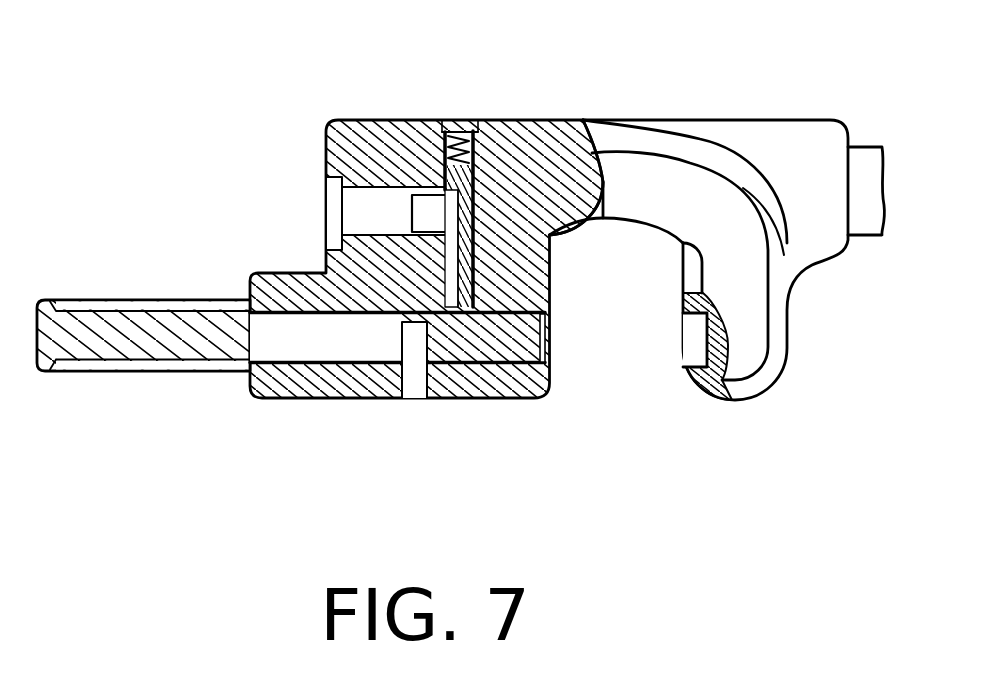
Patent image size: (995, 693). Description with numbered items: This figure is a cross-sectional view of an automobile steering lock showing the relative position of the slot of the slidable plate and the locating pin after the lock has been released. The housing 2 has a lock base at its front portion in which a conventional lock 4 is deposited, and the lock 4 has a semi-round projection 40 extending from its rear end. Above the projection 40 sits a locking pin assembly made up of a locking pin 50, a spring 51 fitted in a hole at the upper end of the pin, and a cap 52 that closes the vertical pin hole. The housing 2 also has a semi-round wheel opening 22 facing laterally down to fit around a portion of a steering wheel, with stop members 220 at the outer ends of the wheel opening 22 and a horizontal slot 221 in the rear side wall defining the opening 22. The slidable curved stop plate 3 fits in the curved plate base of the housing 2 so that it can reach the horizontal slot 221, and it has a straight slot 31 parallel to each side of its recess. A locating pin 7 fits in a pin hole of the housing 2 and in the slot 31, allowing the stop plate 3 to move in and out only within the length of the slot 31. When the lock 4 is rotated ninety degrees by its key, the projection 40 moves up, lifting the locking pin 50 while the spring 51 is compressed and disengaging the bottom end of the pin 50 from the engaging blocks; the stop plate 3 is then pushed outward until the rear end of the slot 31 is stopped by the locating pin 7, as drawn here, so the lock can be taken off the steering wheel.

The housing 2 is at (760, 120).
The stop member 220 is at (672, 175).
The horizontal slot 221 is at (690, 340).
The wheel opening 22 is at (607, 302).
The slidable curved stop plate 3 is at (163, 300).
The straight slot 31 is at (297, 350).
The lock 4 is at (370, 197).
The semi-round projection 40 is at (428, 205).
The locking pin 50 is at (540, 150).
The spring 51 is at (487, 138).
The cap 52 is at (461, 126).
The locating pin 7 is at (413, 382).